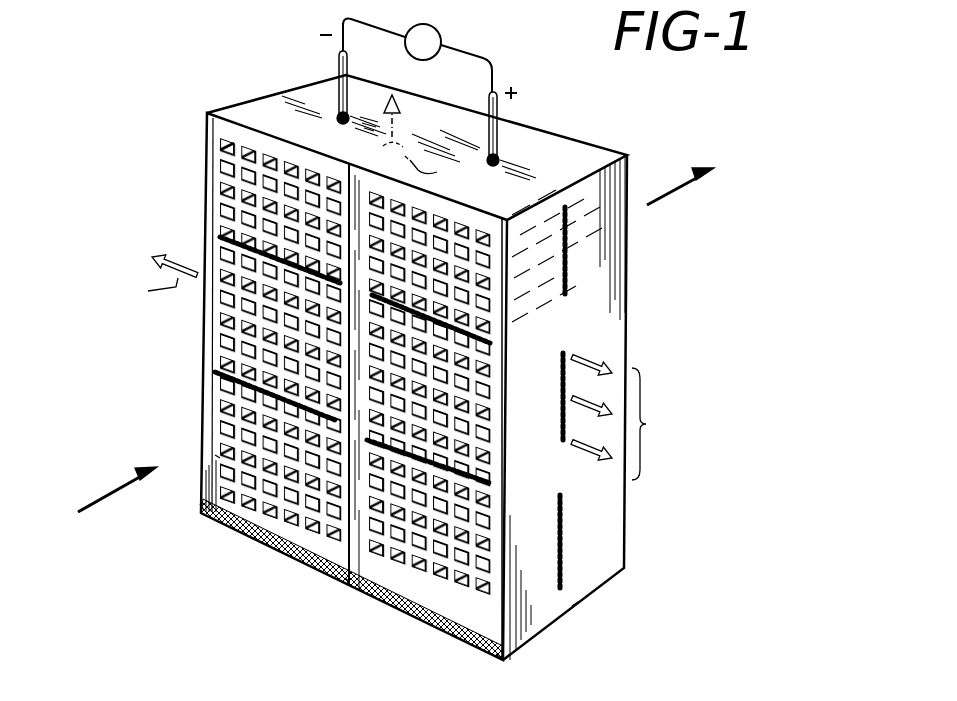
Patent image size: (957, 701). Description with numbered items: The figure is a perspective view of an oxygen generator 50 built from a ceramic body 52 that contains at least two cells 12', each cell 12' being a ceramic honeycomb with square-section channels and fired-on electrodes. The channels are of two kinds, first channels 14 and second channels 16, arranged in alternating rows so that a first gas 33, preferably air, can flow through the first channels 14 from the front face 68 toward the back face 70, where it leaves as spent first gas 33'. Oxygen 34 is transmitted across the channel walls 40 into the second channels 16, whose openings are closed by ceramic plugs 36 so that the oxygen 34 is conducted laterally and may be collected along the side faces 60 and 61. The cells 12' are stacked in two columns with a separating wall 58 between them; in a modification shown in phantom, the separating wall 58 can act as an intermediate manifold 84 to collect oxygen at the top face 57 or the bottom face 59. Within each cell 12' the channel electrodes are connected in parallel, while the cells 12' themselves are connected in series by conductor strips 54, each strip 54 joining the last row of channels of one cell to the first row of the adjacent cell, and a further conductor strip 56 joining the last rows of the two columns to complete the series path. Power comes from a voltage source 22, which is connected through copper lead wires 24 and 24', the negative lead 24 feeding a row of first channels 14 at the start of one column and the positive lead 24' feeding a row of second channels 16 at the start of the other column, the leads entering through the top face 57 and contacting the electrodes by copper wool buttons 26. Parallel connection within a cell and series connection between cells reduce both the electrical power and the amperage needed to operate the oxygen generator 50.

The oxygen generator 50 is at (208, 92).
The first channels 14 is at (225, 143).
The second channels 16 is at (222, 172).
The cells 12' is at (223, 364).
The second conductor strip 54 is at (222, 237).
The ceramic plugs 36 is at (169, 403).
The channel walls 40 is at (216, 458).
The oxygen 34 is at (660, 424).
The first gas 33 is at (101, 489).
The spent first gas 33' is at (709, 187).
The ceramic body 52 is at (197, 496).
The side face 61 is at (198, 508).
The second conductor strip 56 is at (256, 538).
The separating wall 58 is at (346, 578).
The front face 68 is at (494, 651).
The side face 60 is at (520, 645).
The bottom face 59 is at (573, 607).
The back face 70 is at (624, 548).
The negative lead wire 24 is at (333, 68).
The positive lead wire 24' is at (510, 102).
The copper wool buttons 26 is at (338, 113).
The voltage source 22 is at (440, 30).
The top face 57 is at (435, 118).
The intermediate manifold 84 is at (426, 143).